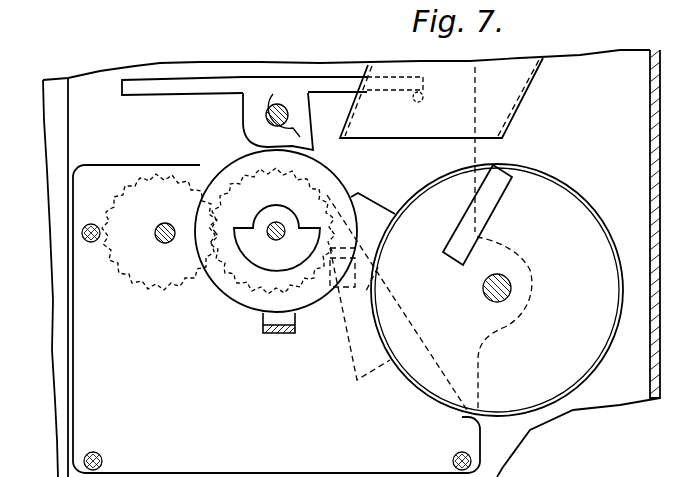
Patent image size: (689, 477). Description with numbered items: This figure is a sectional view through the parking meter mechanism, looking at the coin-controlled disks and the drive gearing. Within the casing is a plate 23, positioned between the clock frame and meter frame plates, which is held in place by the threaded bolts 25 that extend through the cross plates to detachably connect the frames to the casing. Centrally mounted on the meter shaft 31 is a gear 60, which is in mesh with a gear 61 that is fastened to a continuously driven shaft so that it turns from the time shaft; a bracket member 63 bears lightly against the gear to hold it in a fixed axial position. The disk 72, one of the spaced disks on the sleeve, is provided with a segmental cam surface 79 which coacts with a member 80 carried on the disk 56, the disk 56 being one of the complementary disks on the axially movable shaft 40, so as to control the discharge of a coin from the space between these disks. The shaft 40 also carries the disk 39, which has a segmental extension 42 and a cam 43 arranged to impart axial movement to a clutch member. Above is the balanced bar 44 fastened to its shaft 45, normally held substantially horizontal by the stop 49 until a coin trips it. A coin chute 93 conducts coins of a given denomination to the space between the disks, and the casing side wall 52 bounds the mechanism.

The plate 23 is at (118, 155).
The threaded bolts 25 is at (82, 231).
The meter shaft 31 is at (277, 222).
The disk 39 is at (563, 177).
The axially movable shaft 40 is at (512, 289).
The segmental extension 42 is at (361, 196).
The cam 43 is at (378, 268).
The balanced bar 44 is at (262, 78).
The shaft 45 is at (265, 115).
The stop 49 is at (425, 97).
The casing wall 52 is at (661, 152).
The disk 56 is at (578, 200).
The gear 60 is at (150, 292).
The gear 61 is at (222, 280).
The bracket member 63 is at (272, 334).
The disk 72 is at (241, 159).
The segmental cam surface 79 is at (260, 263).
The member 80 is at (503, 173).
The chute 93 is at (524, 93).